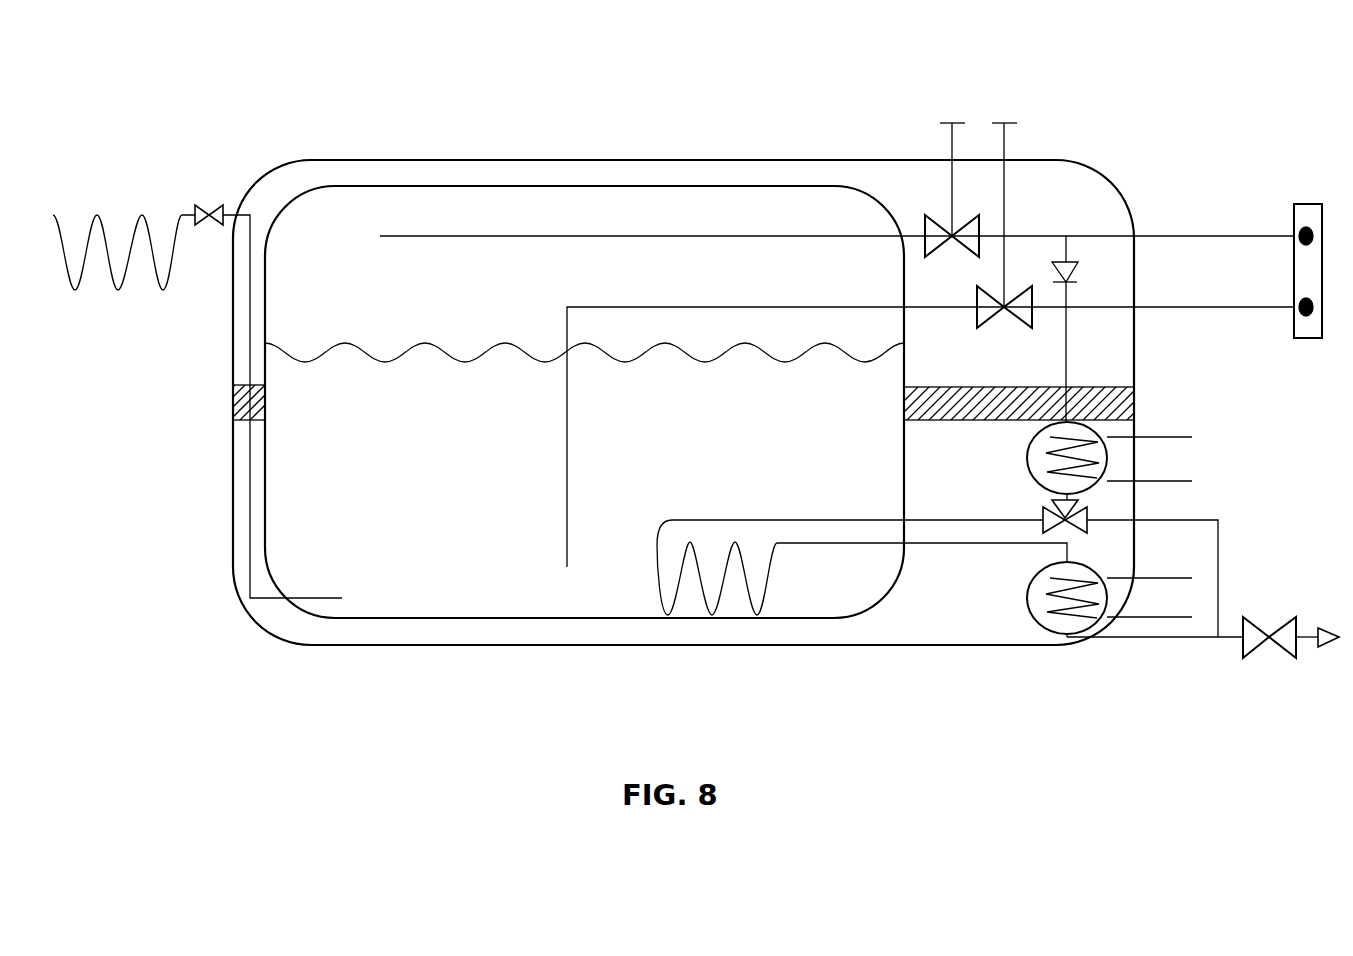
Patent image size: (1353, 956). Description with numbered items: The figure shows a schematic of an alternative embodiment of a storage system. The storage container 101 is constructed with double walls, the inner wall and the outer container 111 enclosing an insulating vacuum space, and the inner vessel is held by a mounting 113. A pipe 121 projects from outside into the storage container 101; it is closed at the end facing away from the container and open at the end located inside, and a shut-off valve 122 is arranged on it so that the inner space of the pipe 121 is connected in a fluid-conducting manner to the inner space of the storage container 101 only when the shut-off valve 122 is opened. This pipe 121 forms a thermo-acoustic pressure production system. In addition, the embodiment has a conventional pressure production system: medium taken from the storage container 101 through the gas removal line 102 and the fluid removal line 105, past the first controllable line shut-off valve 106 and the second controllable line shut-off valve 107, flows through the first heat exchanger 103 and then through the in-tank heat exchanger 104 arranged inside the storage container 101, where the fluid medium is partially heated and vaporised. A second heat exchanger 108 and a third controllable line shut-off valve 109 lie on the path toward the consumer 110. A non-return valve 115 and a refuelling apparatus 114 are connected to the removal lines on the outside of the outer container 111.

The storage container 101 is at (487, 187).
The gas removal line 102 is at (697, 235).
The first heat exchanger 103 is at (1098, 482).
The in-tank heat exchanger 104 is at (780, 577).
The fluid removal line 105 is at (757, 305).
The first controllable line shut-off valve 106 is at (942, 205).
The second controllable line shut-off valve 107 is at (973, 322).
The second heat exchanger 108 is at (1043, 632).
The third controllable line shut-off valve 109 is at (1248, 665).
The consumer 110 is at (1318, 655).
The outer container 111 is at (443, 160).
The mounting 113 is at (245, 385).
The refuelling apparatus 114 is at (1311, 203).
The non-return valve 115 is at (1075, 253).
The pipe 121 is at (108, 285).
The shut-off valve 122 is at (198, 198).